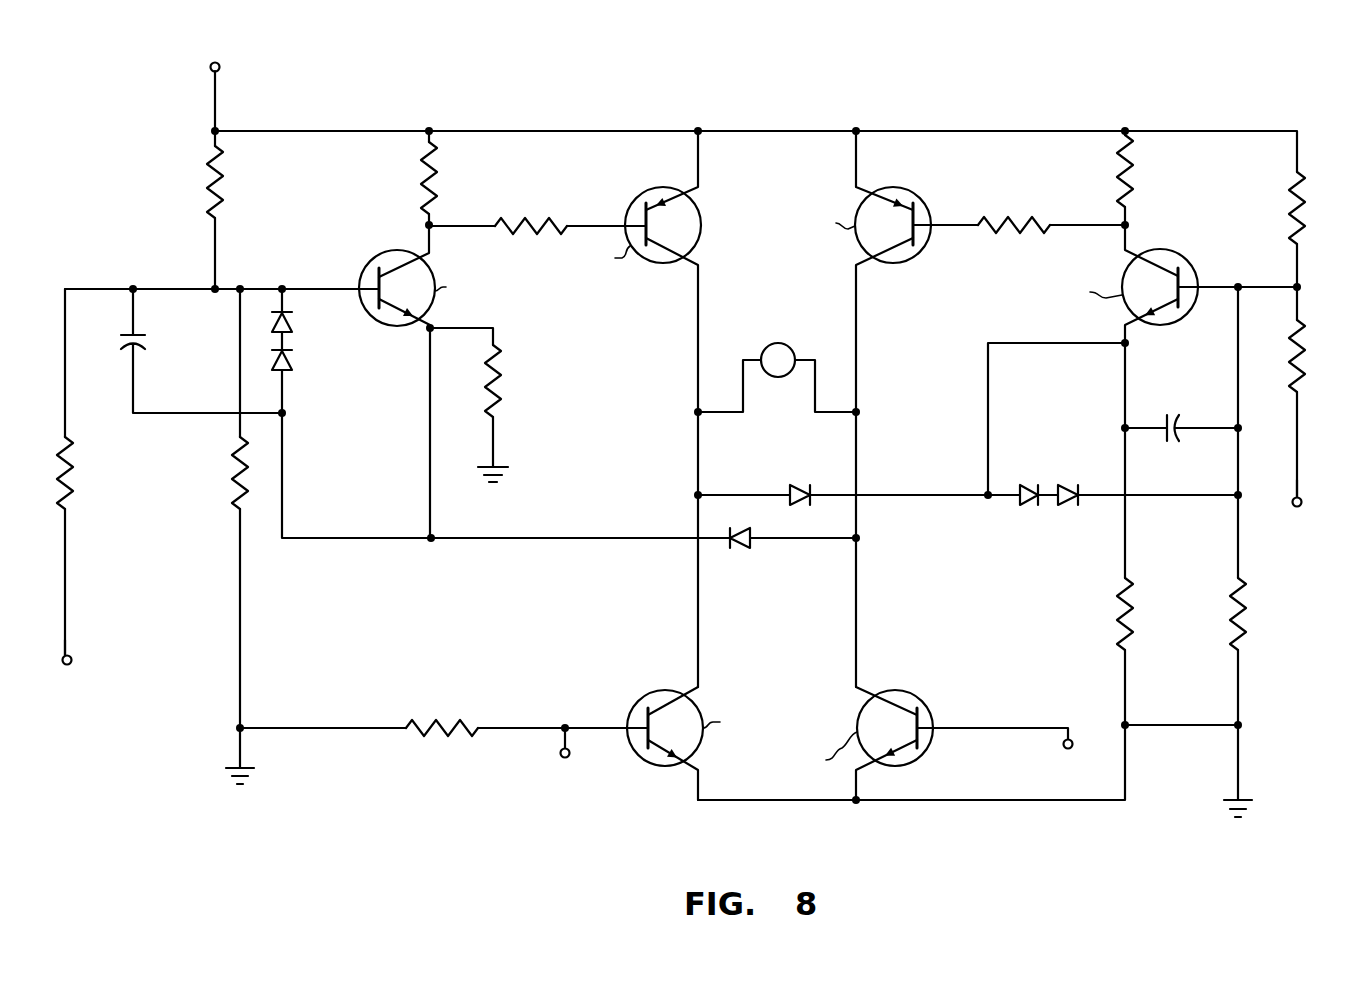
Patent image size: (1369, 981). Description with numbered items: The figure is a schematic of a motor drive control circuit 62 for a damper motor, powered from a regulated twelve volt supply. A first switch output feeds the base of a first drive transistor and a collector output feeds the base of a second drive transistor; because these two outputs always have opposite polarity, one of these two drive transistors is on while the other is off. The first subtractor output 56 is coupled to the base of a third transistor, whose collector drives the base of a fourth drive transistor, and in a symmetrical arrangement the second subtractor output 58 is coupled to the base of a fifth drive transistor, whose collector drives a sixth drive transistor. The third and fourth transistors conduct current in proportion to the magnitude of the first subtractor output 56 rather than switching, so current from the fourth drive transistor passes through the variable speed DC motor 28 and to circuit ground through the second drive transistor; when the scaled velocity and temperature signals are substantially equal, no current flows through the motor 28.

The variable speed DC motor 28 is at (790, 346).
The first subtractor output 56 is at (67, 633).
The second subtractor output 58 is at (1297, 466).
The motor drive control circuit 62 is at (913, 100).